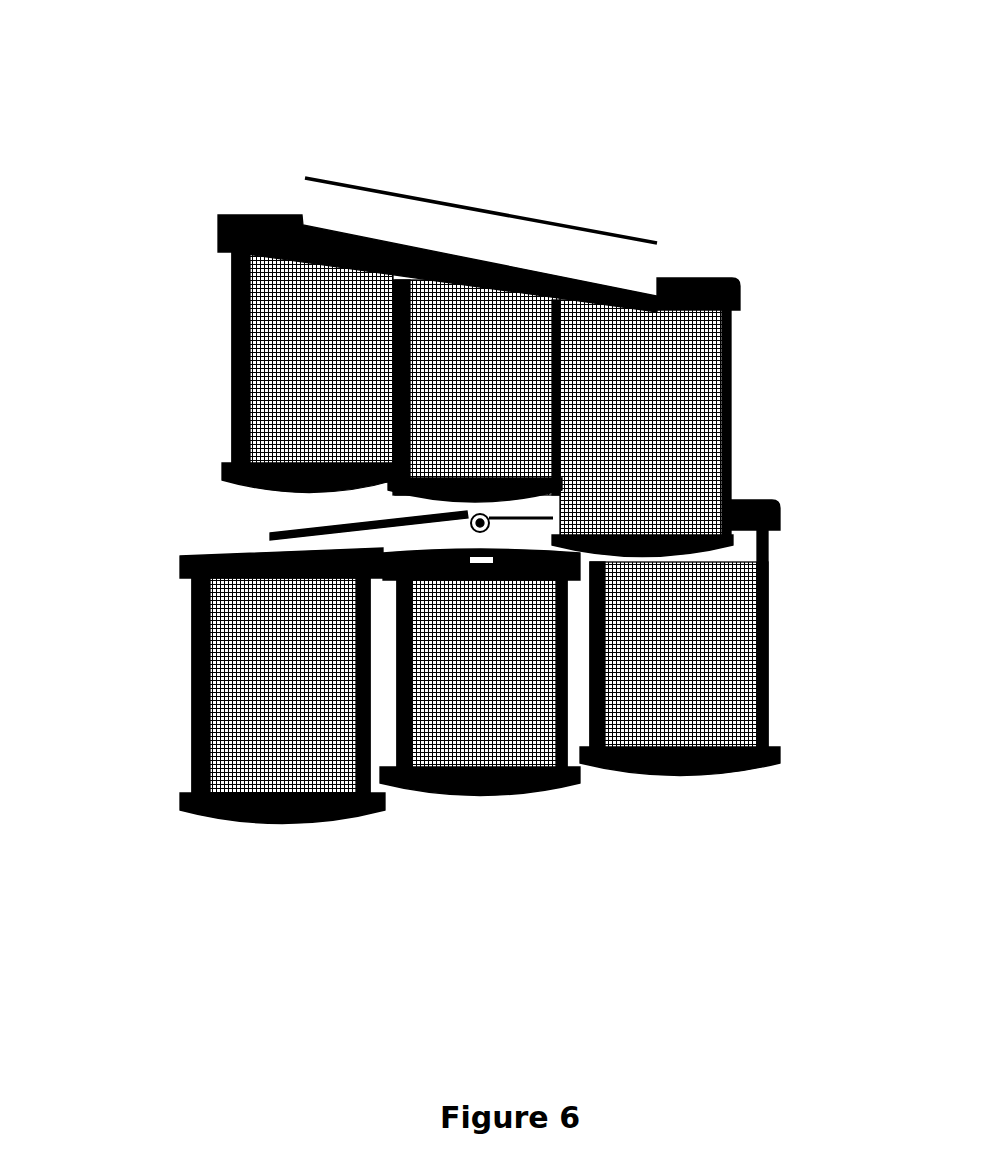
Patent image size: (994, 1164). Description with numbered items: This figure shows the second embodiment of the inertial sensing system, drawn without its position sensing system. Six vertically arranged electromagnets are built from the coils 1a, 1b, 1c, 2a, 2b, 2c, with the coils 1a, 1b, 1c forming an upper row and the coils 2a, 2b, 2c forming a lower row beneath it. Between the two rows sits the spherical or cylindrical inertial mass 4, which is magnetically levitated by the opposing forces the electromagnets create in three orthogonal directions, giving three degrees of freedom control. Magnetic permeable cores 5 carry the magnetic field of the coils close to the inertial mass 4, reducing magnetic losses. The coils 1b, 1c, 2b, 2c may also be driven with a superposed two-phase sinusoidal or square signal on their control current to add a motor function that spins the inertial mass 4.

The magnetic permeable cores 5 is at (332, 548).
The coil 1a is at (473, 345).
The coil 1b is at (285, 312).
The coil 1c is at (657, 393).
The coil 2a is at (500, 710).
The coil 2b is at (257, 713).
The coil 2c is at (757, 640).
The inertial mass 4 is at (475, 545).